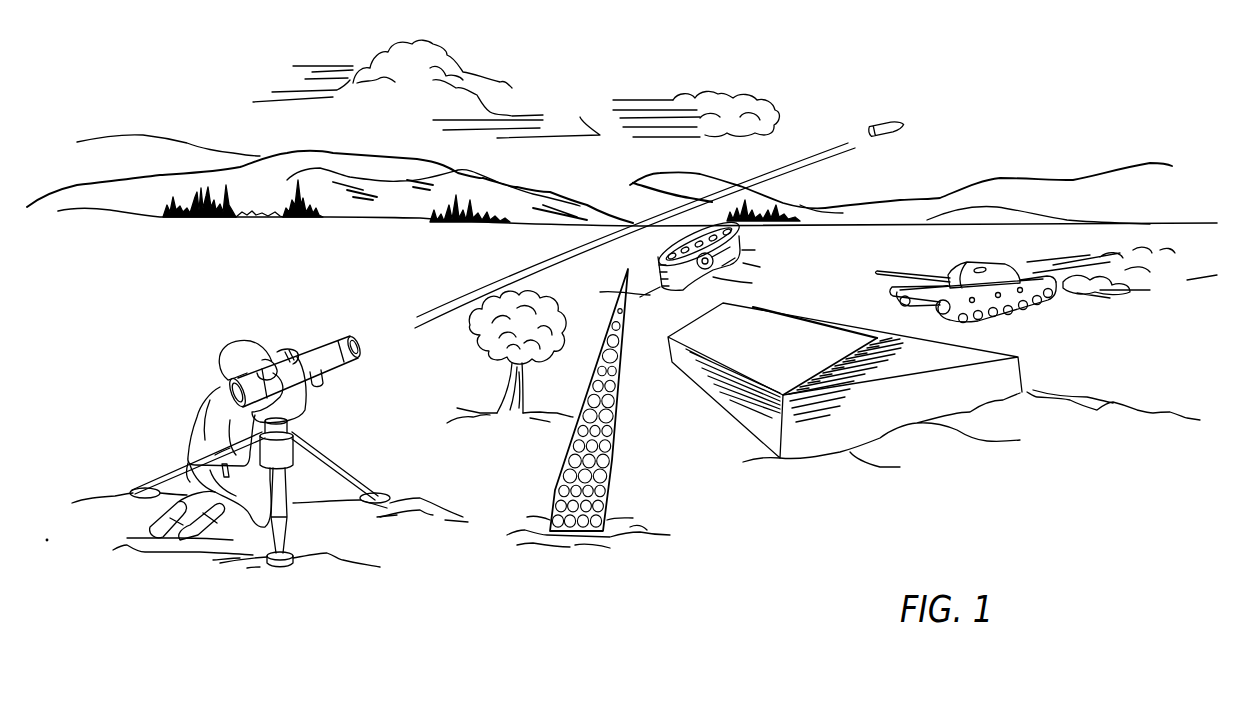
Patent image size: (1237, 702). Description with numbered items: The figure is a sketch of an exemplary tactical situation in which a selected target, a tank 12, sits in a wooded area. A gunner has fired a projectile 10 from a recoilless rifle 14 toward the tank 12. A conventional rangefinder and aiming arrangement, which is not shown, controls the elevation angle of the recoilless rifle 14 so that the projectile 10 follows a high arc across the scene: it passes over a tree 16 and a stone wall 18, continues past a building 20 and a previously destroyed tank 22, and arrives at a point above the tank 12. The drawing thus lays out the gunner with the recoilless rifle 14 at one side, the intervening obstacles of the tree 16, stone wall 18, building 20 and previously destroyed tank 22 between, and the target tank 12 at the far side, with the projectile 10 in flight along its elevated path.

The projectile 10 is at (883, 121).
The tank 12 is at (970, 258).
The recoilless rifle 14 is at (323, 340).
The tree 16 is at (495, 362).
The stone wall 18 is at (613, 477).
The building 20 is at (1025, 375).
The previously destroyed tank 22 is at (760, 263).